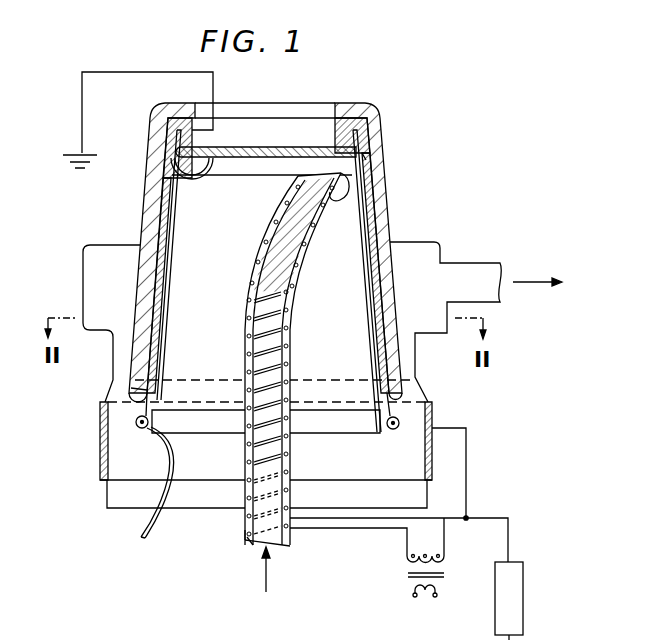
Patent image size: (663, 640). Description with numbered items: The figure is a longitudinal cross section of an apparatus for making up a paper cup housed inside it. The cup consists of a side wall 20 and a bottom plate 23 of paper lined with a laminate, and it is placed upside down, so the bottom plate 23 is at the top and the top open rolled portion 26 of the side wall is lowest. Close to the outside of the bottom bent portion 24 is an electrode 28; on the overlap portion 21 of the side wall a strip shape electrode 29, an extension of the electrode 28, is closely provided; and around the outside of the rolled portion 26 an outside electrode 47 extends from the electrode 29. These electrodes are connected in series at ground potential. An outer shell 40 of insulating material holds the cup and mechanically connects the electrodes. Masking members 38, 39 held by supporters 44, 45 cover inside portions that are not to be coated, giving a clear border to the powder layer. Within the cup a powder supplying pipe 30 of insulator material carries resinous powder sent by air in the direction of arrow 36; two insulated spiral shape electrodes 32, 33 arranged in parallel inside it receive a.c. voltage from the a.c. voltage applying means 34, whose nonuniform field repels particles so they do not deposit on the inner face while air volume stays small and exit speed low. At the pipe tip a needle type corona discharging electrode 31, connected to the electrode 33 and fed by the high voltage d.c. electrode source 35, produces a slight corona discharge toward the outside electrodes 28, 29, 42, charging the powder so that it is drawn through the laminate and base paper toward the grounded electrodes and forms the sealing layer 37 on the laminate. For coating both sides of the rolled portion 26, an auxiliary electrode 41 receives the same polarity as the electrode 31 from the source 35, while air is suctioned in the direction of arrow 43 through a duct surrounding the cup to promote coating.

The side wall 20 is at (160, 200).
The overlap portion 21 is at (389, 217).
The bottom plate 23 is at (297, 147).
The bottom bent portion 24 is at (368, 148).
The top open rolled portion 26 is at (397, 429).
The electrode 28 is at (166, 123).
The strip shape electrode 29 is at (378, 188).
The powder supplying pipe 30 is at (270, 236).
The needle type corona discharging electrode 31 is at (337, 178).
The spiral shape electrode 32 is at (245, 530).
The spiral shape electrode 33 is at (247, 538).
The a.c. voltage applying means 34 is at (447, 572).
The high voltage d.c. electrode source 35 is at (498, 573).
The arrow 36 is at (264, 572).
The sealing layer 37 is at (358, 167).
The masking member 38 is at (252, 147).
The masking member 39 is at (170, 250).
The outer shell 40 is at (155, 158).
The auxiliary electrode 41 is at (432, 447).
The outside electrode 42 is at (436, 258).
The arrow 43 is at (532, 282).
The supporter 44 is at (152, 497).
The supporter 45 is at (198, 180).
The outside electrode 47 is at (143, 390).